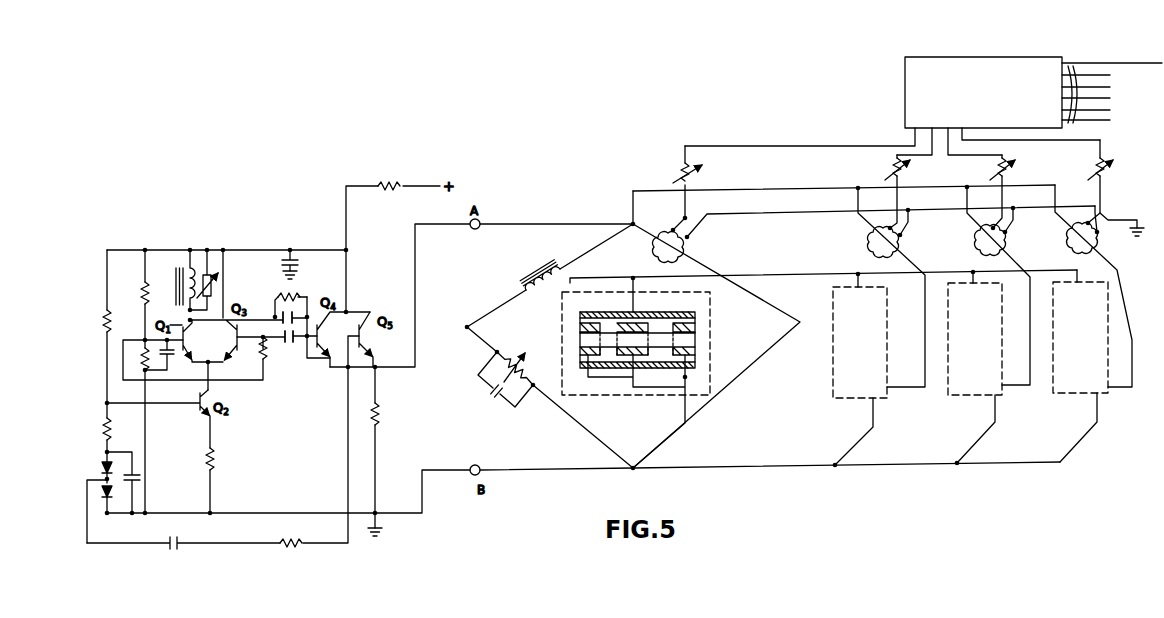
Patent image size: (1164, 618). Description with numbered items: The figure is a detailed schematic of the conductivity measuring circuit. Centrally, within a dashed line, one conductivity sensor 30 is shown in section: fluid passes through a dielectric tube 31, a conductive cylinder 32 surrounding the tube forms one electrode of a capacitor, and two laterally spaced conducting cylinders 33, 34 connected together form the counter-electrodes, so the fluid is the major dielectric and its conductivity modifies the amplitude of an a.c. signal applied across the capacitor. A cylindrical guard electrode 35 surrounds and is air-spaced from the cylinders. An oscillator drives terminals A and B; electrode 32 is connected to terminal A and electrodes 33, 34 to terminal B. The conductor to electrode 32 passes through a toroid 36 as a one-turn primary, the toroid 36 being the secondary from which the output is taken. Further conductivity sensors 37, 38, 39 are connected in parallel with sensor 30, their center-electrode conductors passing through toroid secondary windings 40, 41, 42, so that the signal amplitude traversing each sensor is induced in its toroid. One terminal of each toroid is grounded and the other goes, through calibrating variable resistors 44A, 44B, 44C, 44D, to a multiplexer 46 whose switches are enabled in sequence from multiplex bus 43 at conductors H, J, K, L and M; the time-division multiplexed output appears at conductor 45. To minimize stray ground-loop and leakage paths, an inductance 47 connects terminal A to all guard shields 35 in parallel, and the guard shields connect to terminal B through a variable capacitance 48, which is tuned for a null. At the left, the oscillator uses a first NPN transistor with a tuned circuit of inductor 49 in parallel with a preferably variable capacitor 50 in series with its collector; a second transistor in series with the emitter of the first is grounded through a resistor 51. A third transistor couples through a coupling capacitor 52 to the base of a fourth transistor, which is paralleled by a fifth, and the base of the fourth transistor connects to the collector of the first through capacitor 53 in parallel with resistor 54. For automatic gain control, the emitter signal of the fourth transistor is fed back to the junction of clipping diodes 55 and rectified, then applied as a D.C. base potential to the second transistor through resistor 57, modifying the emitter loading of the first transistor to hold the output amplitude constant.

The conductivity sensor 30 is at (634, 380).
The dielectric tube 31 is at (694, 335).
The conductive cylinder 32 is at (661, 311).
The conducting cylinder 33 is at (579, 329).
The conducting cylinder 34 is at (694, 323).
The guard electrode 35 is at (609, 308).
The toroid 36 is at (692, 247).
The conductivity sensor 37 is at (838, 403).
The conductivity sensor 38 is at (952, 401).
The conductivity sensor 39 is at (1067, 399).
The toroid secondary winding 40 is at (864, 253).
The toroid secondary winding 41 is at (971, 246).
The toroid secondary winding 42 is at (1065, 245).
The multiplex bus 43 is at (1101, 116).
The variable resistor 44A is at (704, 173).
The variable resistor 44B is at (889, 171).
The variable resistor 44C is at (987, 169).
The variable resistor 44D is at (1087, 169).
The conductor 45 is at (1106, 62).
The multiplexer 46 is at (905, 83).
The inductance 47 is at (533, 260).
The variable capacitance 48 is at (528, 366).
The inductor 49 is at (172, 268).
The capacitor 50 is at (210, 282).
The resistor 51 is at (221, 467).
The coupling capacitor 52 is at (292, 343).
The capacitor 53 is at (277, 316).
The resistor 54 is at (297, 295).
The clipping diode 55 is at (101, 478).
The resistor 57 is at (111, 435).